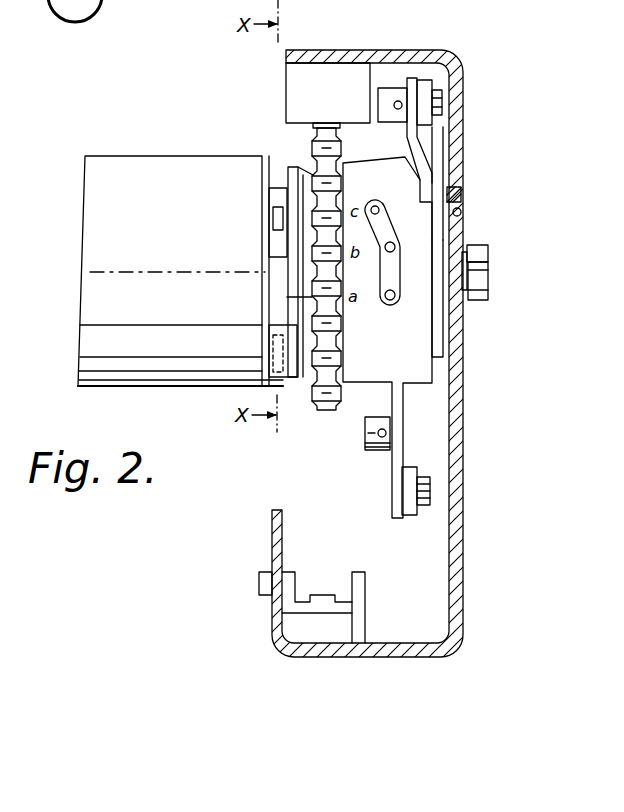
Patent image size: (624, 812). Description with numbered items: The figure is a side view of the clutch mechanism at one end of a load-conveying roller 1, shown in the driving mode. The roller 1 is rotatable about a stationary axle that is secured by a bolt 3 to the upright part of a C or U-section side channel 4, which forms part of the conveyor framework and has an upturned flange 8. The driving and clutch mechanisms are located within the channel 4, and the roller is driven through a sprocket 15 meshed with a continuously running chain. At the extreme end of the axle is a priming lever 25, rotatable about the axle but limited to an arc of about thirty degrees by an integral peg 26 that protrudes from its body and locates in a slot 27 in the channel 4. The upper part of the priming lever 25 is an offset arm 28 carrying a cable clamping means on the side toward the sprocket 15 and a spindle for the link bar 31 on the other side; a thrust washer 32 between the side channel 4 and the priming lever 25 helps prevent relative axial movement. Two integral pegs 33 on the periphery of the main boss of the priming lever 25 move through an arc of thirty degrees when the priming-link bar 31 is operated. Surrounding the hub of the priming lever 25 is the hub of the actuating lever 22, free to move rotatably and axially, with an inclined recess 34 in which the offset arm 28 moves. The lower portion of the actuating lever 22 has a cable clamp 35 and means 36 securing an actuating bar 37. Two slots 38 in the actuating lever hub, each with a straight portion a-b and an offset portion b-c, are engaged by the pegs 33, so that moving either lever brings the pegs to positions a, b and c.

The load-conveying roller 1 is at (172, 162).
The bolt 3 is at (475, 275).
The side channel 4 is at (456, 404).
The upturned flange 8 is at (275, 533).
The sprocket 15 is at (337, 395).
The actuating lever 22 is at (413, 372).
The priming lever 25 is at (438, 343).
The integral peg 26 is at (462, 187).
The slot 27 is at (461, 211).
The offset arm 28 is at (433, 172).
The link bar 31 is at (425, 87).
The thrust washer 32 is at (486, 252).
The integral pegs 33 is at (394, 296).
The inclined recess 34 is at (417, 163).
The cable clamp 35 is at (390, 445).
The means securing actuating bar 36 is at (422, 485).
The actuating bar 37 is at (410, 510).
The slots 38 is at (382, 227).